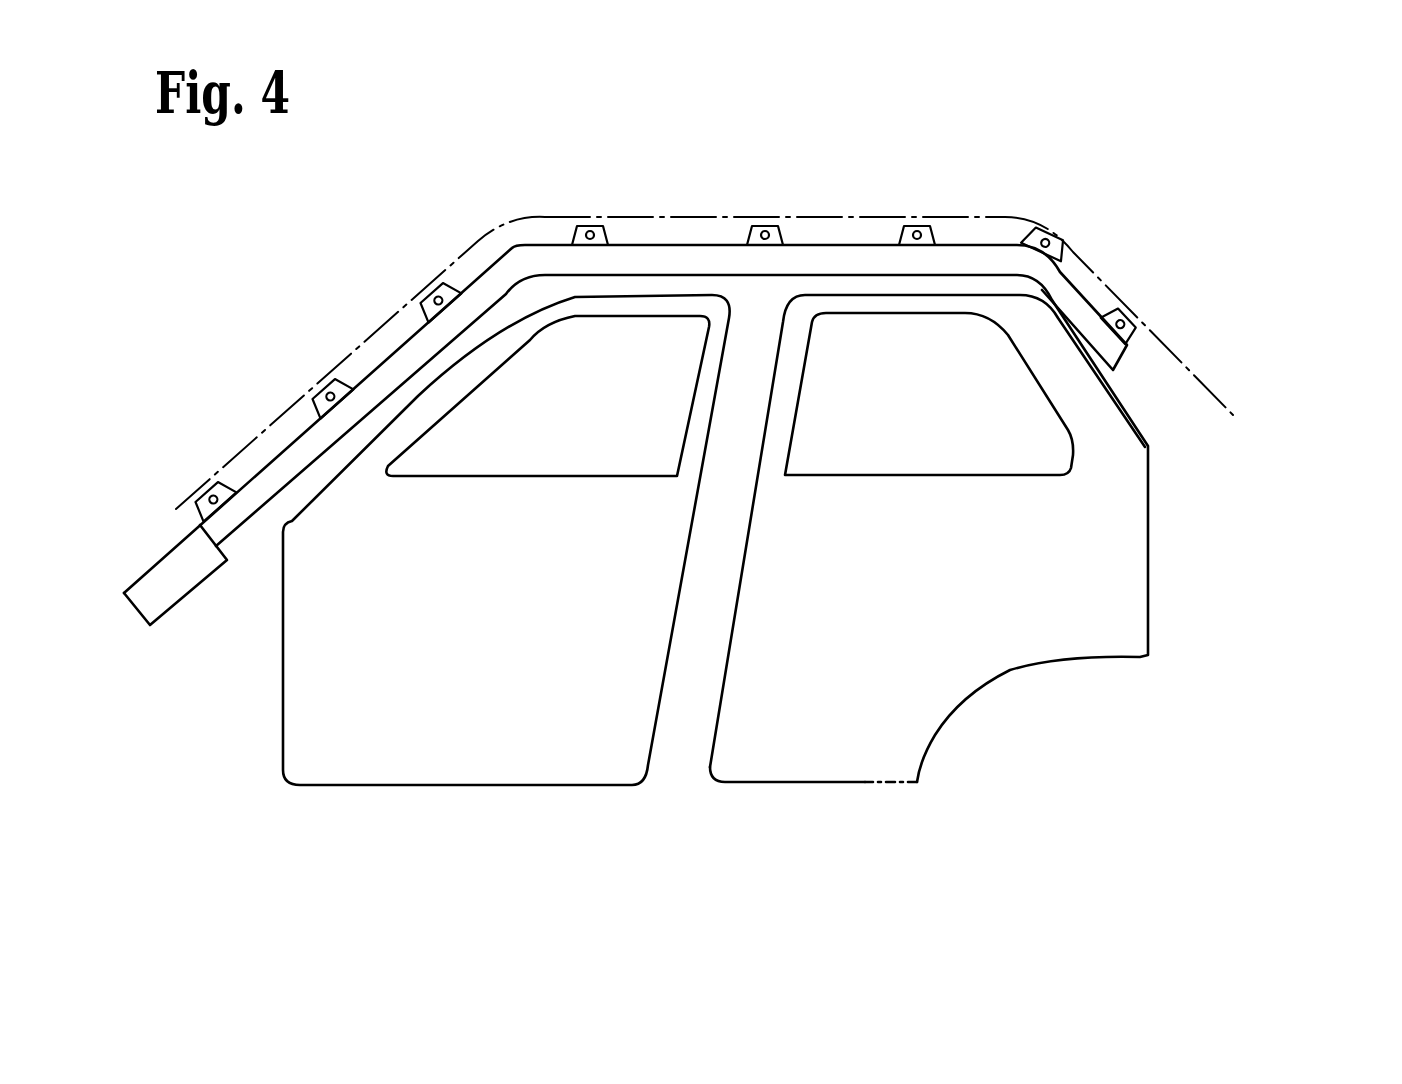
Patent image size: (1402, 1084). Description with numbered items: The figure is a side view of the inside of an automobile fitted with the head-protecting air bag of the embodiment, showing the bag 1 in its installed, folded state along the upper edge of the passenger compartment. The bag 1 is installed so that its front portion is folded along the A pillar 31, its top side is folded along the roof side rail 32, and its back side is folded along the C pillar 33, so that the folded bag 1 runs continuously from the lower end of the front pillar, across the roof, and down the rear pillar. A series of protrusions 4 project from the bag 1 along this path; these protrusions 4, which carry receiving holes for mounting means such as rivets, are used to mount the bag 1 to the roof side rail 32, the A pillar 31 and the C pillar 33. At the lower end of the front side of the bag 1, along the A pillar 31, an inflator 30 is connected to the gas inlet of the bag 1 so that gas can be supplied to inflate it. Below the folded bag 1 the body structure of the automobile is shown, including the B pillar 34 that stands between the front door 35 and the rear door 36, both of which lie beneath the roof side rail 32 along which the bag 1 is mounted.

The bag 1 is at (530, 263).
The protrusions 4 is at (232, 478).
The inflator 30 is at (172, 588).
The A pillar 31 is at (360, 353).
The roof side rail 32 is at (812, 233).
The C pillar 33 is at (1165, 355).
The B pillar 34 is at (717, 553).
The front door 35 is at (490, 737).
The rear door 36 is at (850, 743).